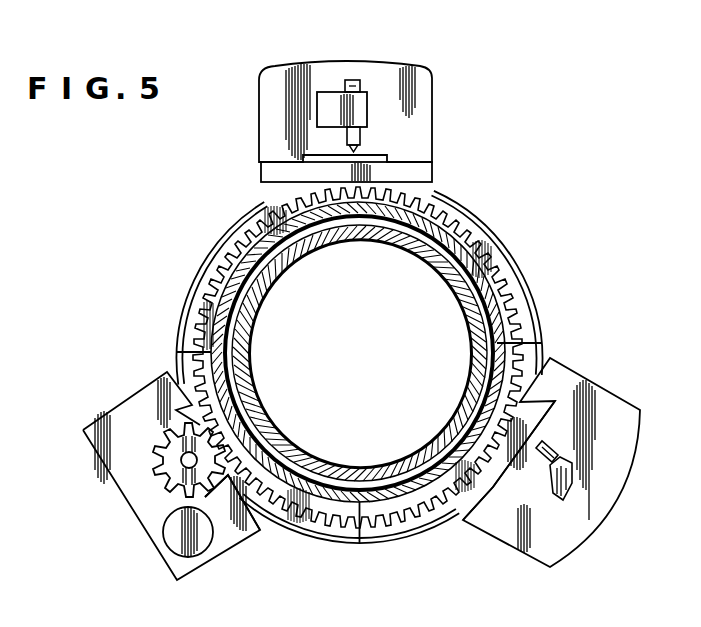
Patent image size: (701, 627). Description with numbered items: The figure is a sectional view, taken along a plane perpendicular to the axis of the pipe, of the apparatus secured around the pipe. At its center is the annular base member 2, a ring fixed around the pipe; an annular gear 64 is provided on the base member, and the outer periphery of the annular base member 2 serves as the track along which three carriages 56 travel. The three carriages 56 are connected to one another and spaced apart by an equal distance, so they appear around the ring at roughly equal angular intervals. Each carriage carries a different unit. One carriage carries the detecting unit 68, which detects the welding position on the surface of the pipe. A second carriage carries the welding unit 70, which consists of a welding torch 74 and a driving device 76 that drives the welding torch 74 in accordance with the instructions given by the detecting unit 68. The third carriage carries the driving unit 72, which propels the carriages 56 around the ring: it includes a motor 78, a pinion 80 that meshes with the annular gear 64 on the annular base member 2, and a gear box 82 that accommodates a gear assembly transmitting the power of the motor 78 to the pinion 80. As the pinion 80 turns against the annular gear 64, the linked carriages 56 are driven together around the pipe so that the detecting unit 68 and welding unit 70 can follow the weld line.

The annular base member 2 is at (496, 228).
The carriage 56 is at (432, 170).
The annular gear 64 is at (516, 295).
The detecting unit 68 is at (636, 362).
The welding unit 70 is at (367, 92).
The driving unit 72 is at (161, 487).
The welding torch 74 is at (362, 132).
The driving device 76 is at (431, 102).
The motor 78 is at (202, 547).
The pinion 80 is at (168, 445).
The gear box 82 is at (113, 488).